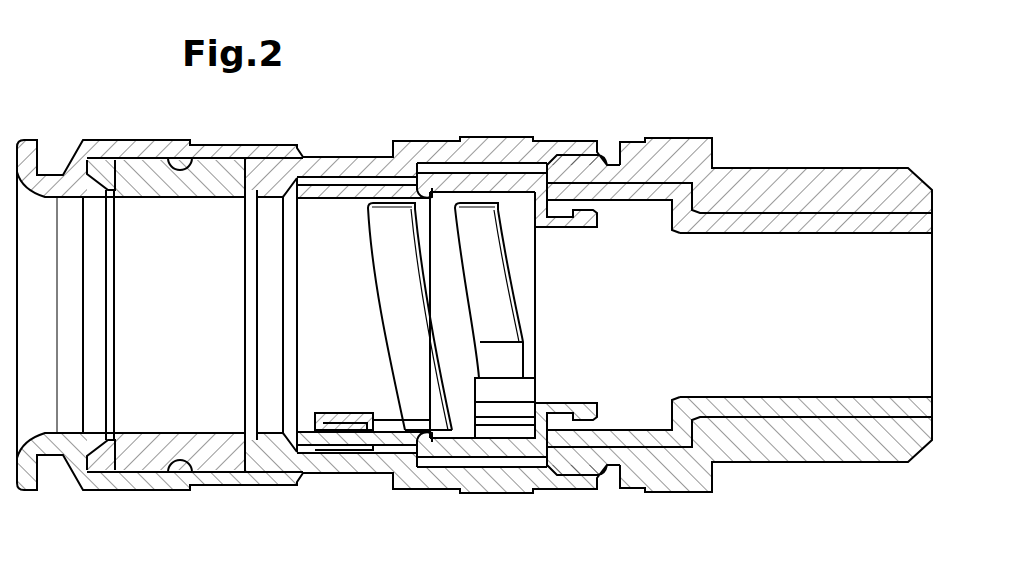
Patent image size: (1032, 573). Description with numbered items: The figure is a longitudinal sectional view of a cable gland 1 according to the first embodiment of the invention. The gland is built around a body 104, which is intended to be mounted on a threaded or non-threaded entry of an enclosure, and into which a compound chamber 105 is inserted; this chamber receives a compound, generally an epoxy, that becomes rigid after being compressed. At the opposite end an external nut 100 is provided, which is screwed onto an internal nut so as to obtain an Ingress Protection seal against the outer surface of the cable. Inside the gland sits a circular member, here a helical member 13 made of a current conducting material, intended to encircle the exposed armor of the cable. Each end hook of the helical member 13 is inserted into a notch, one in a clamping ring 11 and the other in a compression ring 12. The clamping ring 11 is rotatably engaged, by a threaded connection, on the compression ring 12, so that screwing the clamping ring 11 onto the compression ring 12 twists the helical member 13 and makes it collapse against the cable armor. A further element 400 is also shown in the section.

The cable gland 1 is at (512, 107).
The clamping ring 11 is at (342, 440).
The compression ring 12 is at (497, 447).
The helical member 13 is at (388, 216).
The external nut 100 is at (95, 147).
The body 104 is at (838, 188).
The compound chamber 105 is at (795, 345).
The sealing ring 400 is at (423, 192).